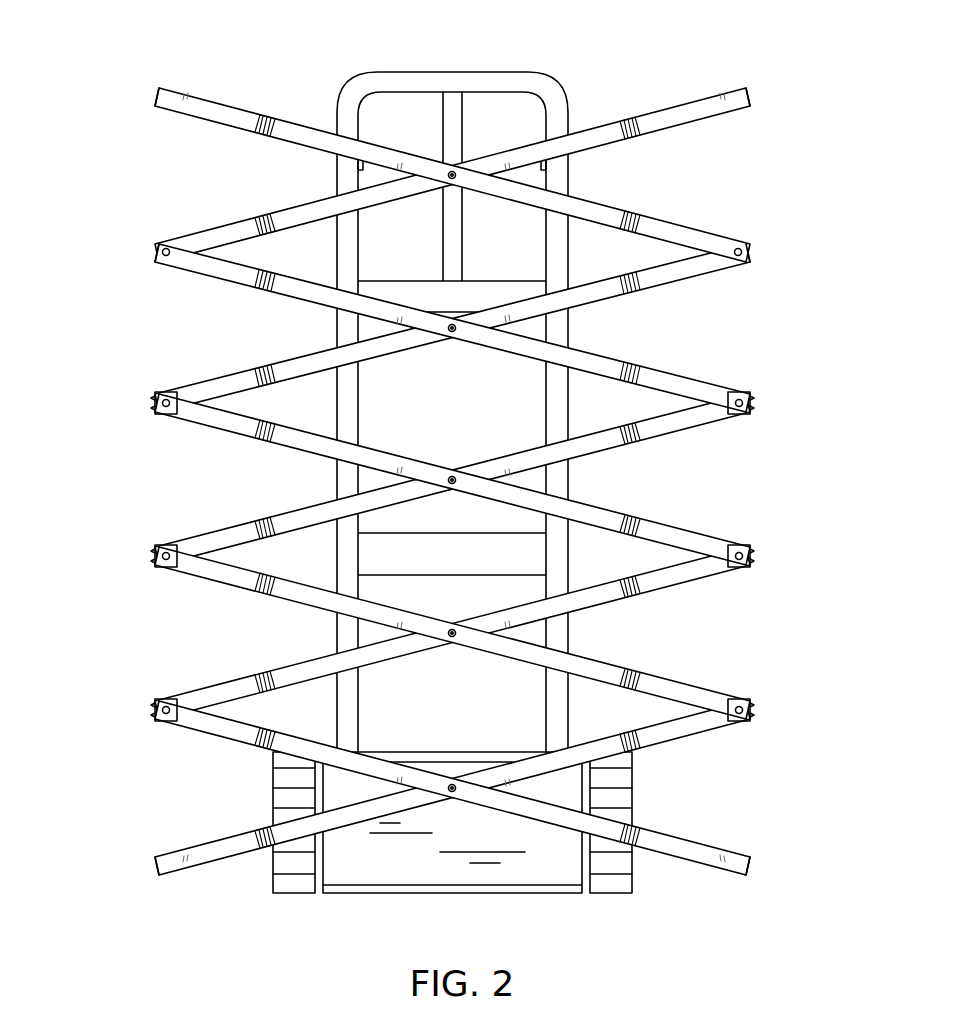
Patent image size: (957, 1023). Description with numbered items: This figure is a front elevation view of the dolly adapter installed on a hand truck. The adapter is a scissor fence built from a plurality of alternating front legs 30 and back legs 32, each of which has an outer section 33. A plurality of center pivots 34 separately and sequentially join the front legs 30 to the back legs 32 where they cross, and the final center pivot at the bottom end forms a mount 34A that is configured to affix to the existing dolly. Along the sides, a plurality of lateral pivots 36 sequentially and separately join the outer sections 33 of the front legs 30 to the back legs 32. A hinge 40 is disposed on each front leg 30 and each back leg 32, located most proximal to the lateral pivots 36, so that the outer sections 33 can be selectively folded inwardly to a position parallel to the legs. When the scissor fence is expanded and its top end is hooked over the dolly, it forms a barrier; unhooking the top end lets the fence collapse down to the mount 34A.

The front leg 30 is at (400, 150).
The back leg 32 is at (322, 217).
The outer section 33 is at (185, 95).
The center pivot 34 is at (452, 180).
The mount 34A is at (455, 783).
The lateral pivot 36 is at (153, 404).
The hinge 40 is at (280, 115).